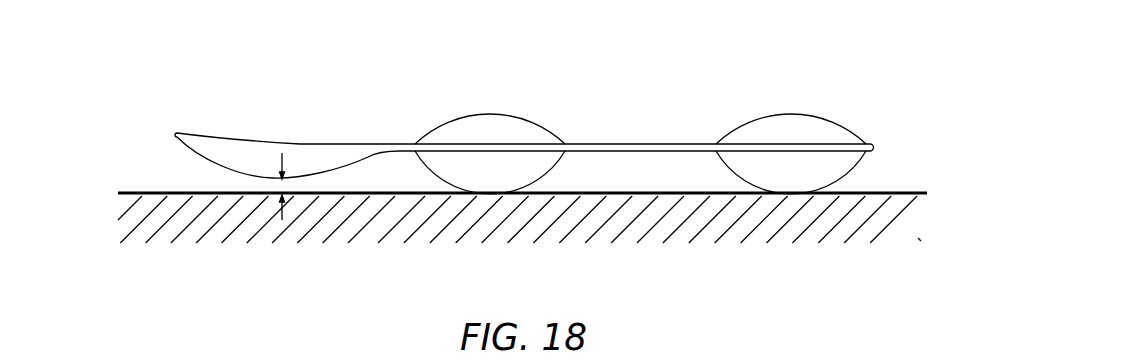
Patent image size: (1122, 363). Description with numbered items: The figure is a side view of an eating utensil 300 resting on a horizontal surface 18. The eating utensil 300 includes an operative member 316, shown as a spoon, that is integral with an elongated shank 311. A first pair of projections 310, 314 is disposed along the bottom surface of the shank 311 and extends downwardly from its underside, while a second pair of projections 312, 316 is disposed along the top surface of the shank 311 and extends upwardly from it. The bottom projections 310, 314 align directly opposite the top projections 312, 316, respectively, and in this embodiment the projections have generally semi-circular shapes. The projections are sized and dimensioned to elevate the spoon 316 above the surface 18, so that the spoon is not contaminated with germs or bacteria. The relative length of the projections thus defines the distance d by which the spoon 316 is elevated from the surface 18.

The surface 18 is at (147, 192).
The eating utensil 300 is at (560, 143).
The projection 310 is at (510, 172).
The elongated shank 311 is at (627, 143).
The projection 312 is at (488, 127).
The projection 314 is at (815, 162).
The operative member 316 is at (795, 127).
The distance d is at (275, 185).